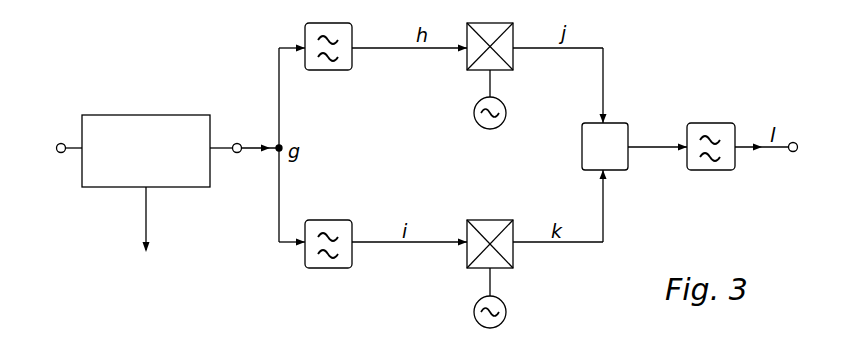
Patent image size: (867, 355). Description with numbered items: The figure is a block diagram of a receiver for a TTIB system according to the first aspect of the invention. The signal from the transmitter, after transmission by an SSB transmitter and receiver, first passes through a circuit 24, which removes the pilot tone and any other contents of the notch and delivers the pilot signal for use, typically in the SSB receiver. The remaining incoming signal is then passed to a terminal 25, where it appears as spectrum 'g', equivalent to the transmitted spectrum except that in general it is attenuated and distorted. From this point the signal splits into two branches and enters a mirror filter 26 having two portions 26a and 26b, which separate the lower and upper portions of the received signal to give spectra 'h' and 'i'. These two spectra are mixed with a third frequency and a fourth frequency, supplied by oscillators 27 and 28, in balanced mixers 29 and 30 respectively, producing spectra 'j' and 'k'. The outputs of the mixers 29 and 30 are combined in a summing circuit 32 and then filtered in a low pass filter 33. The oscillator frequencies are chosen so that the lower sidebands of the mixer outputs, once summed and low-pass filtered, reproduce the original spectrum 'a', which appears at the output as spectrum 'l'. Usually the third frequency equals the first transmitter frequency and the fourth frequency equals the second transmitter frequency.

The circuit 24 is at (179, 113).
The terminal 25 is at (237, 143).
The mirror filter 26 is at (385, 160).
The first portion of the mirror filter 26a is at (330, 72).
The second portion of the mirror filter 26b is at (330, 220).
The oscillator 27 is at (506, 114).
The oscillator 28 is at (505, 300).
The balanced mixer 29 is at (513, 62).
The balanced mixer 30 is at (490, 220).
The summing circuit 32 is at (620, 123).
The low pass filter 33 is at (713, 123).